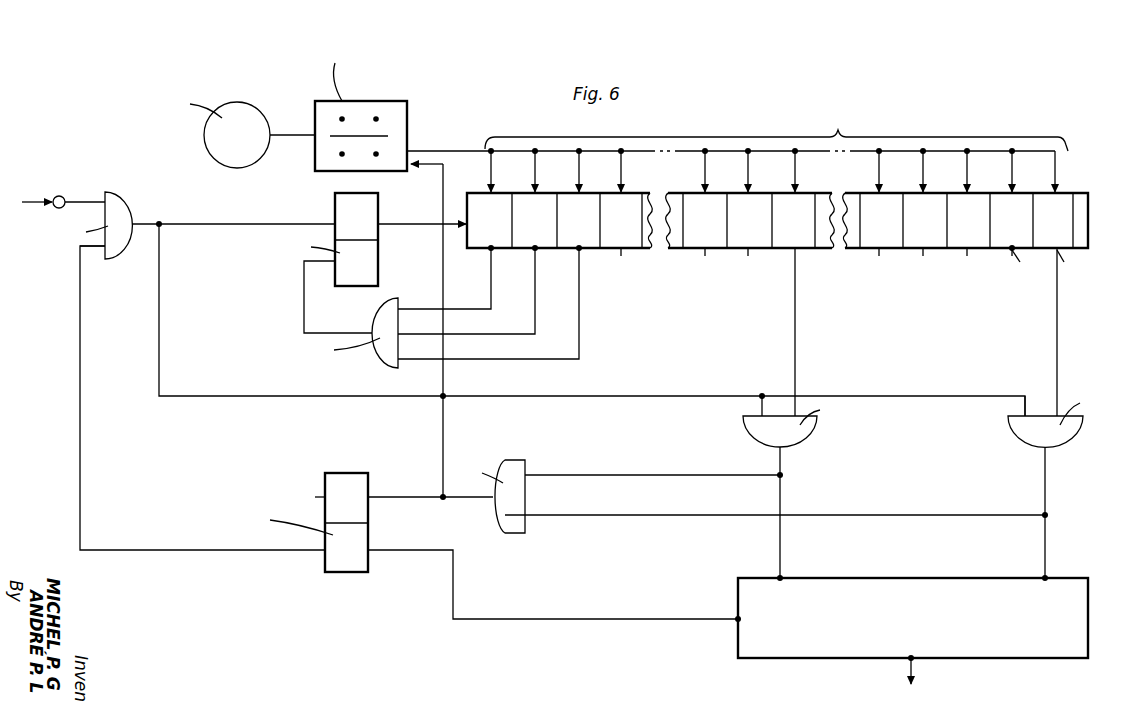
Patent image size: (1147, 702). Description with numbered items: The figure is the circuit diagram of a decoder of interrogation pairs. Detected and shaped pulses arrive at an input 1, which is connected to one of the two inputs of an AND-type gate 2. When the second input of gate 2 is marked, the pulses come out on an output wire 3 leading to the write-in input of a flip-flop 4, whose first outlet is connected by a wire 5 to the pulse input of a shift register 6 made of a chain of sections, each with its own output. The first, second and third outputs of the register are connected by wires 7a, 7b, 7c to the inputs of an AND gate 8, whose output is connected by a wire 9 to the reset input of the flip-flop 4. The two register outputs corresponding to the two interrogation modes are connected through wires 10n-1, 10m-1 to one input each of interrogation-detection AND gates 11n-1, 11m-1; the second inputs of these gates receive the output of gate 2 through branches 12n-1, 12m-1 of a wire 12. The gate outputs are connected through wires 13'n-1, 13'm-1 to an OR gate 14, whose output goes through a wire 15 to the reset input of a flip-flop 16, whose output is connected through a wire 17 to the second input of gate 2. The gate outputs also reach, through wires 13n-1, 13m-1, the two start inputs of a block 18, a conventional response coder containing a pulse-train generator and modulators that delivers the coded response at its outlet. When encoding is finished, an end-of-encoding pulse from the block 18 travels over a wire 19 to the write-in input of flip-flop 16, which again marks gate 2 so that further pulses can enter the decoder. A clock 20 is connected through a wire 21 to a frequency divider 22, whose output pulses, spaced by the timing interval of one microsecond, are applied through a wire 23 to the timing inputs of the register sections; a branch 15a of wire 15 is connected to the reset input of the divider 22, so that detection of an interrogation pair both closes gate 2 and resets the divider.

The input 1 is at (58, 196).
The AND-type gate 2 is at (124, 205).
The output wire 3 is at (221, 224).
The flip-flop 4 is at (362, 287).
The wire 5 is at (428, 228).
The shift register 6 is at (905, 255).
The wire 7a is at (491, 307).
The wire 7b is at (542, 321).
The wire 7c is at (579, 352).
The AND gate 8 is at (382, 351).
The wire 9 is at (303, 314).
The wire 10n-1 is at (797, 335).
The wire 10m-1 is at (1059, 340).
The AND gate 11n-1 is at (806, 428).
The AND gate 11m-1 is at (1067, 440).
The wire 12 is at (437, 401).
The branch of wire 12 12n-1 is at (760, 398).
The branch of wire 12 12m-1 is at (1022, 404).
The wire 13'n-1 is at (652, 464).
The wire 13'm-1 is at (775, 531).
The wire 13n-1 is at (783, 462).
The wire 13m-1 is at (1025, 514).
The OR gate 14 is at (516, 527).
The wire 15 is at (421, 500).
The branch of wire 15 15a is at (446, 447).
The flip-flop 16 is at (352, 575).
The wire 17 is at (193, 556).
The block 18 is at (894, 635).
The wire 19 is at (565, 620).
The clock 20 is at (247, 112).
The wire 21 is at (290, 136).
The frequency divider 22 is at (391, 106).
The wire 23 is at (453, 151).